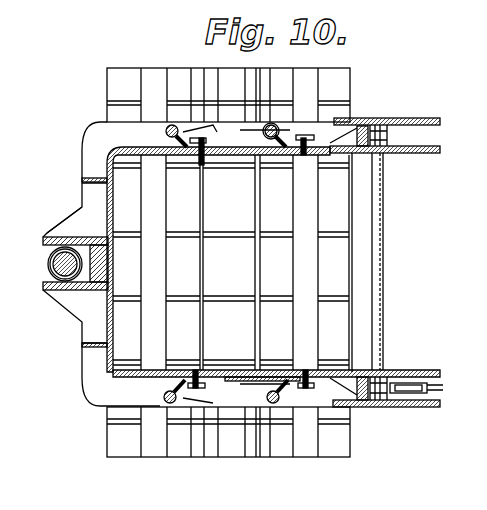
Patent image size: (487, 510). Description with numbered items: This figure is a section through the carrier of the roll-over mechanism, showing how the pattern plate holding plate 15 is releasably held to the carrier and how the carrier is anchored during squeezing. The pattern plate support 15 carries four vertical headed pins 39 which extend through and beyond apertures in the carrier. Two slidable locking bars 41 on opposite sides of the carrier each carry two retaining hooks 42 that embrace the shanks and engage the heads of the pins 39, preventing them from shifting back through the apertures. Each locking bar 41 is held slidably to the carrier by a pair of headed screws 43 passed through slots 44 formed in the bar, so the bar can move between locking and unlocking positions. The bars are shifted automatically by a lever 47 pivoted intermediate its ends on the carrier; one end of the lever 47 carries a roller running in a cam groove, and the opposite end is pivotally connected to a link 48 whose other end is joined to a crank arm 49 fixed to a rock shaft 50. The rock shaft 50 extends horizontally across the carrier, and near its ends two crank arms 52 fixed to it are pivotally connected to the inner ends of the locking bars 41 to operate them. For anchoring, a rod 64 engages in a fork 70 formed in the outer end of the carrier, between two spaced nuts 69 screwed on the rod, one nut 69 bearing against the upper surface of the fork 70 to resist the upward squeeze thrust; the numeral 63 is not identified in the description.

The pattern plate holding plate 15 is at (340, 207).
The vertical headed pins 39 is at (163, 131).
The slidable locking bars 41 is at (236, 265).
The retaining hooks 42 is at (171, 125).
The headed screws 43 is at (203, 140).
The slots 44 is at (218, 157).
The lever 47 is at (273, 124).
The link 48 is at (443, 388).
The crank arm 49 is at (386, 280).
The rock shaft 50 is at (382, 232).
The crank arms 52 is at (393, 133).
The bearing ring 63 is at (47, 278).
The rod 64 is at (56, 262).
The nuts 69 is at (43, 276).
The fork 70 is at (44, 244).